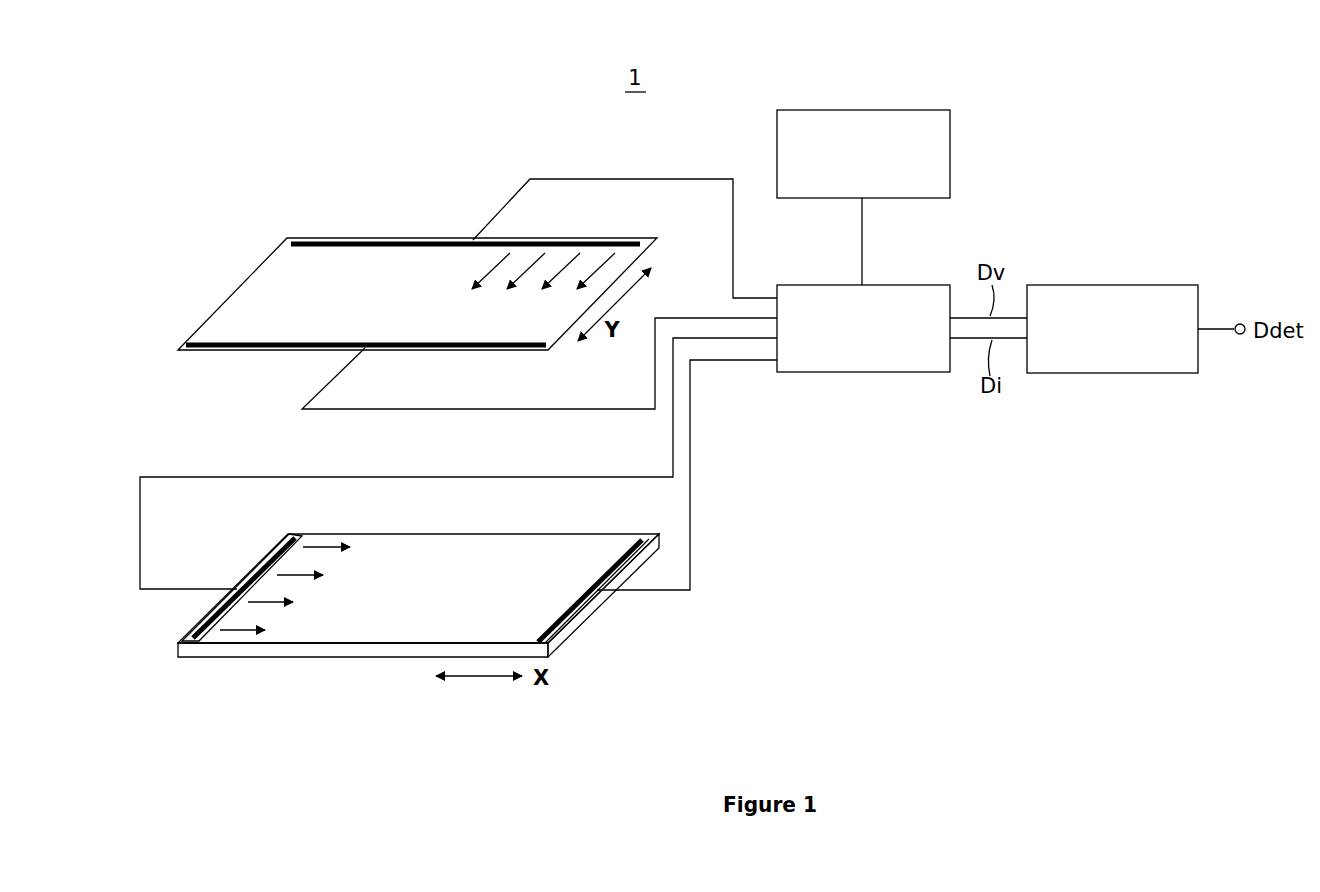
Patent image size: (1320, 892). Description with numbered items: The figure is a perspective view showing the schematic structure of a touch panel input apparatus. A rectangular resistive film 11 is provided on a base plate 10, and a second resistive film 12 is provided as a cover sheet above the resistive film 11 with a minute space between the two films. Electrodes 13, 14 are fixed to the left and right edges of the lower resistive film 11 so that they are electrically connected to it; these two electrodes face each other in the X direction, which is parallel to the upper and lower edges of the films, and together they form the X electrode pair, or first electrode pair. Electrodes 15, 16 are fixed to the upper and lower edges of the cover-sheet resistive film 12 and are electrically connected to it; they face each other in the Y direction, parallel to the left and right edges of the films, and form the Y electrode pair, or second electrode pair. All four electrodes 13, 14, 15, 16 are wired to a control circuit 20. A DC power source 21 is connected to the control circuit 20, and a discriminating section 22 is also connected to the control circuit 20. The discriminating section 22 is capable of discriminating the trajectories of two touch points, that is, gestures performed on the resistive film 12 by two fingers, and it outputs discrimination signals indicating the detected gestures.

The base plate 10 is at (285, 657).
The resistive film 11 is at (408, 633).
The resistive film 12 is at (262, 295).
The electrode 13 is at (210, 618).
The electrode 14 is at (567, 618).
The electrode 15 is at (351, 237).
The electrode 16 is at (230, 350).
The control circuit 20 is at (920, 285).
The DC power source 21 is at (920, 110).
The discriminating section 22 is at (1170, 285).